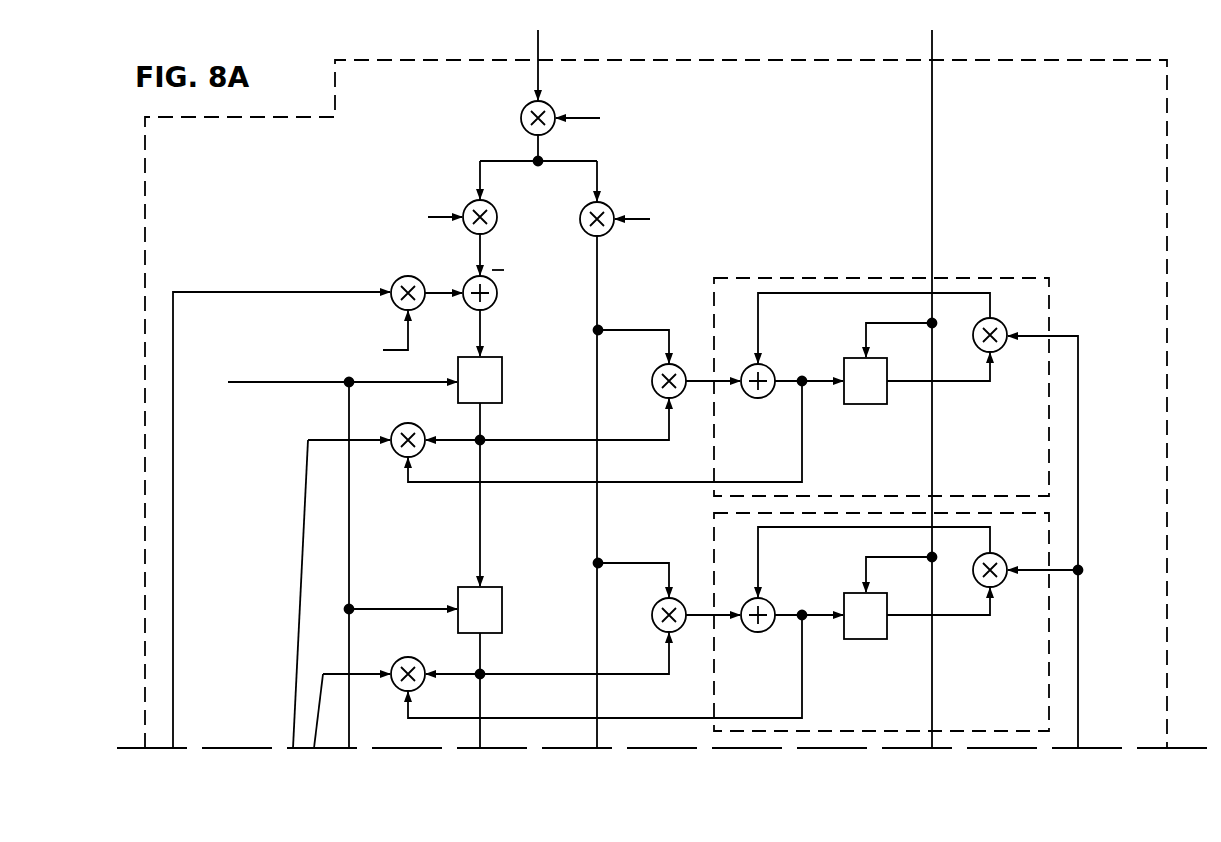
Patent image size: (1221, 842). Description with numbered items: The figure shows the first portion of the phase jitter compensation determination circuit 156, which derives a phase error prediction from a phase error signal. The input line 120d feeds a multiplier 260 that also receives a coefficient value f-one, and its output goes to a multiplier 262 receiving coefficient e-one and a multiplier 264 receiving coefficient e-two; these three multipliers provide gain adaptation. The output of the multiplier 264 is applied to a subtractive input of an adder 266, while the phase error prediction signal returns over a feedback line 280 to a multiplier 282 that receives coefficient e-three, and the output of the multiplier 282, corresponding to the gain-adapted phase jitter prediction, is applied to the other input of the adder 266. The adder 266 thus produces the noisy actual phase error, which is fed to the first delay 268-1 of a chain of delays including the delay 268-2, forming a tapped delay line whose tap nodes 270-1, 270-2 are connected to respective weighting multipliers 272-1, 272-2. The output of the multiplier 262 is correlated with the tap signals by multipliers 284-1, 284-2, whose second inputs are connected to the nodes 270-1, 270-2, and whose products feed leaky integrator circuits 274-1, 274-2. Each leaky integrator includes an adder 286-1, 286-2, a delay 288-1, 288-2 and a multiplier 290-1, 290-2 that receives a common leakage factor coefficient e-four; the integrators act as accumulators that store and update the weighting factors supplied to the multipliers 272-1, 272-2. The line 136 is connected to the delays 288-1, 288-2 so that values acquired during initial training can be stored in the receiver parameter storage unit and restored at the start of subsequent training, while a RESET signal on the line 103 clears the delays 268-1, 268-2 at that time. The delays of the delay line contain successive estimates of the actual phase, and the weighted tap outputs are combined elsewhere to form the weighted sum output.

The input line 120d is at (538, 46).
The phase jitter compensation determination circuit 156 is at (775, 60).
The line 136 is at (934, 48).
The multiplier 260 is at (531, 110).
The multiplier 264 is at (468, 204).
The multiplier 262 is at (609, 206).
The feedback line 280 is at (258, 291).
The multiplier 282 is at (398, 280).
The adder 266 is at (497, 290).
The first delay 268-1 is at (496, 368).
The line 103 is at (268, 385).
The multiplier 272-1 is at (418, 427).
The tap node 270-1 is at (487, 443).
The multiplier 284-1 is at (680, 366).
The leaky integrator circuit 274-1 is at (988, 276).
The adder 286-1 is at (752, 395).
The delay 288-1 is at (868, 404).
The multiplier 290-1 is at (998, 350).
The delay 268-2 is at (496, 590).
The multiplier 272-2 is at (418, 661).
The tap node 270-2 is at (487, 677).
The multiplier 284-2 is at (680, 600).
The leaky integrator circuit 274-2 is at (1049, 546).
The adder 286-2 is at (752, 629).
The delay 288-2 is at (868, 639).
The multiplier 290-2 is at (998, 586).